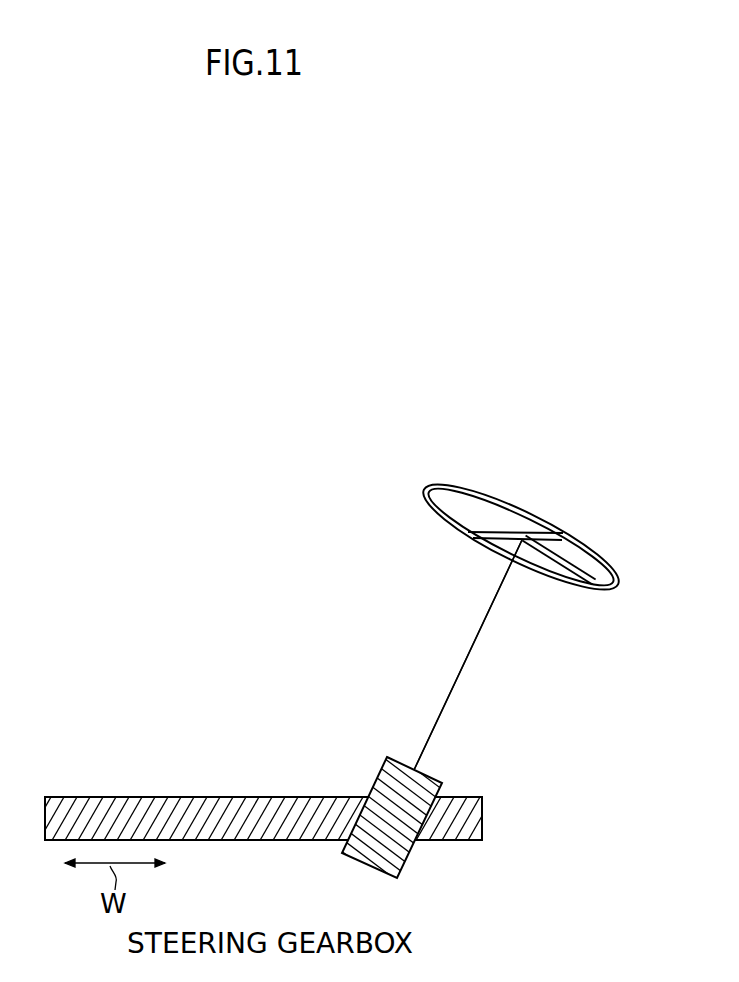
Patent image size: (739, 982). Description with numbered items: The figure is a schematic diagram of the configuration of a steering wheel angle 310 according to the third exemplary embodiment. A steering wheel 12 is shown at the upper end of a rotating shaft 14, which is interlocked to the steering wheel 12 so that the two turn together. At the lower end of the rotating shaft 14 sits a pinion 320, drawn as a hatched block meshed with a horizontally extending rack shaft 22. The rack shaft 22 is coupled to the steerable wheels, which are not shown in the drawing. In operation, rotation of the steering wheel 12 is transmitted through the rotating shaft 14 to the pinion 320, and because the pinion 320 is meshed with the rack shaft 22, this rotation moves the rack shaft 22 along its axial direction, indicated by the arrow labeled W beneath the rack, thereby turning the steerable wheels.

The steering wheel angle 310 is at (107, 480).
The steering wheel 12 is at (565, 523).
The rotating shaft 14 is at (493, 603).
The rack shaft 22 is at (150, 796).
The pinion 320 is at (408, 858).